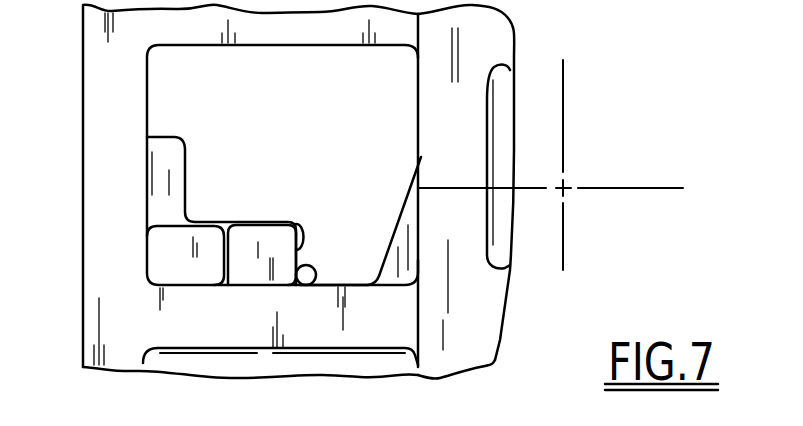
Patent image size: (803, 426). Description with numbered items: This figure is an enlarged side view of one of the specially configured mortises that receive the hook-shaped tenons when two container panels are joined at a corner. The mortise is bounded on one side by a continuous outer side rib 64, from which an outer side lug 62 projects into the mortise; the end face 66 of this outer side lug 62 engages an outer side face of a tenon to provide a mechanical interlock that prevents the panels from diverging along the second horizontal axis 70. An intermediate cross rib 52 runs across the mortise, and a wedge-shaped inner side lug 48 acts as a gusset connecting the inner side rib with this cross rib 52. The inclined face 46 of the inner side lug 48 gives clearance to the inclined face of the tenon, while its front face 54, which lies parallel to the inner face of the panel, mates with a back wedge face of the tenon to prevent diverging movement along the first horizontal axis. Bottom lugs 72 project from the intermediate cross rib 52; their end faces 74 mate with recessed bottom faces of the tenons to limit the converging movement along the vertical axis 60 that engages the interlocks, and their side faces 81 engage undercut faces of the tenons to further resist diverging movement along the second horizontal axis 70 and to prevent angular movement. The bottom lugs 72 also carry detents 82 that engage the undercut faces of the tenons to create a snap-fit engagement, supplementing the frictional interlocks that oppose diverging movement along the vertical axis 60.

The continuous outer side rib 64 is at (112, 93).
The intermediate cross rib 52 is at (362, 328).
The end face of outer side lug 66 is at (187, 165).
The outer side lug 62 is at (157, 177).
The bottom lug 72 is at (265, 290).
The end face of bottom lug 74 is at (252, 222).
The detent 82 is at (303, 235).
The side face of bottom lug 81 is at (313, 285).
The inner side lug 48 is at (394, 217).
The inclined face of wedge-shaped lug 46 is at (392, 235).
The front face of wedge-shaped lug 54 is at (410, 247).
The vertical axis 60 is at (565, 108).
The second horizontal axis 70 is at (628, 190).